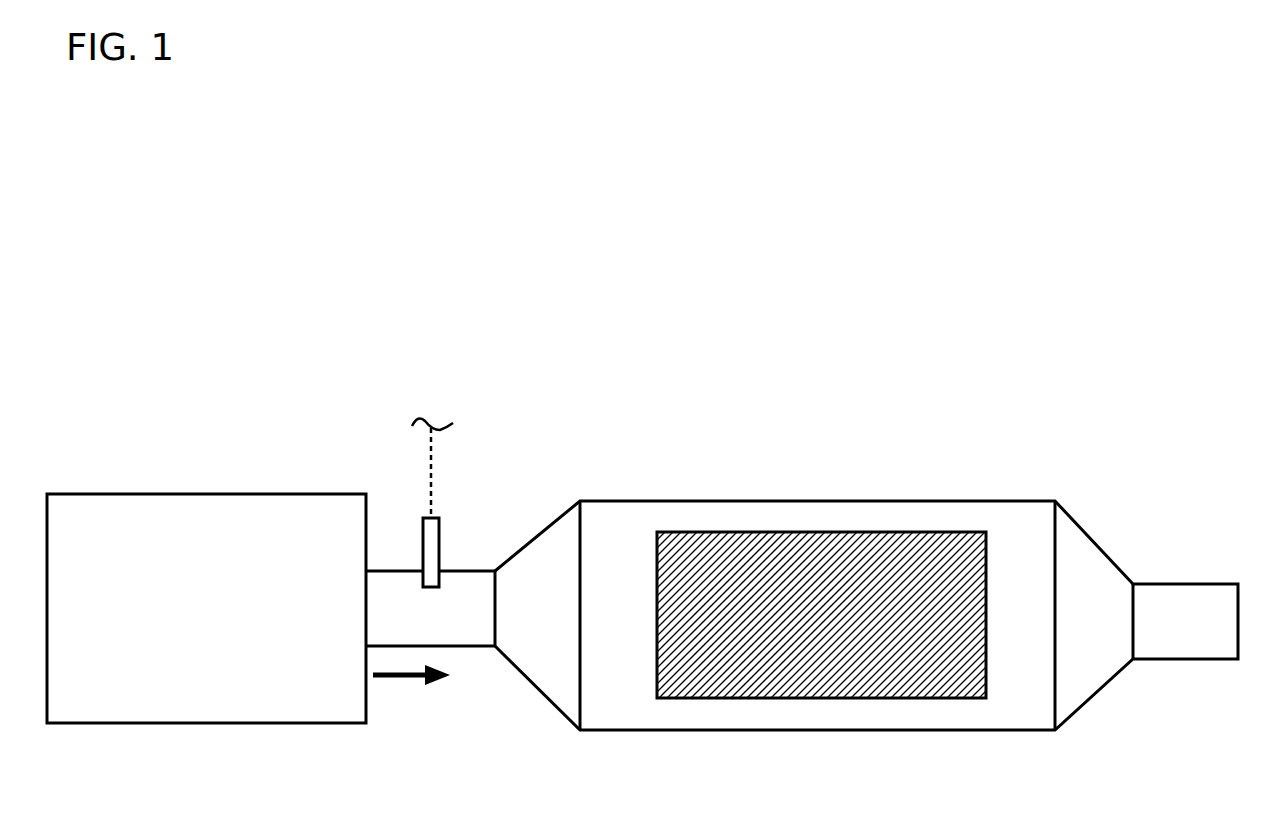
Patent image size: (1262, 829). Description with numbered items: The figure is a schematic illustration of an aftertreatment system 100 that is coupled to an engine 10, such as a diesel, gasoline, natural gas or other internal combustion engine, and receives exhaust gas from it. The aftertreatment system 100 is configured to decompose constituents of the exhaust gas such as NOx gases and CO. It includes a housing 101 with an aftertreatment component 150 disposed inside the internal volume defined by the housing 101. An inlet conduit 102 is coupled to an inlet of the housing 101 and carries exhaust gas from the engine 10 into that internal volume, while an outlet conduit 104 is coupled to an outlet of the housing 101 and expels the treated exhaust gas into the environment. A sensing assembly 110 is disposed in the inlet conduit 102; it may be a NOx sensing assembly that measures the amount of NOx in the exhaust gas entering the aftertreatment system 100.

The aftertreatment system 100 is at (390, 265).
The engine 10 is at (225, 633).
The inlet conduit 102 is at (480, 628).
The sensing assembly 110 is at (442, 527).
The housing 101 is at (659, 732).
The outlet conduit 104 is at (1202, 648).
The aftertreatment component 150 is at (911, 688).